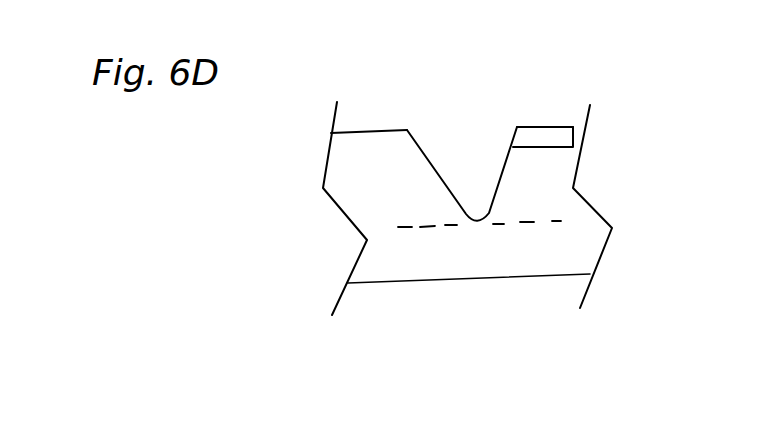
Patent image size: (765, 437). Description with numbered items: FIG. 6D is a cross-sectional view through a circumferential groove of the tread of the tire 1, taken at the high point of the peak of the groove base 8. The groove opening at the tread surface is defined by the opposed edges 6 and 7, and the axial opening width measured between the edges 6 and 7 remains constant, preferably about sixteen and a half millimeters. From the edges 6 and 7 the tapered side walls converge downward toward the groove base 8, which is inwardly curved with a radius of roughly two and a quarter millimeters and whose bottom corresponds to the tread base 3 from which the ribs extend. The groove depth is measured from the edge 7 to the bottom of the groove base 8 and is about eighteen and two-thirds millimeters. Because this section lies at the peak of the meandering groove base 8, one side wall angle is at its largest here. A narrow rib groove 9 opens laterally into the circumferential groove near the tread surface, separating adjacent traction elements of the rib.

The edge 6 is at (409, 128).
The edge 7 is at (513, 46).
The groove base 8 is at (476, 227).
The rib grooves 9 is at (548, 140).
The tread base 3 is at (527, 223).
The tire 1 is at (477, 231).